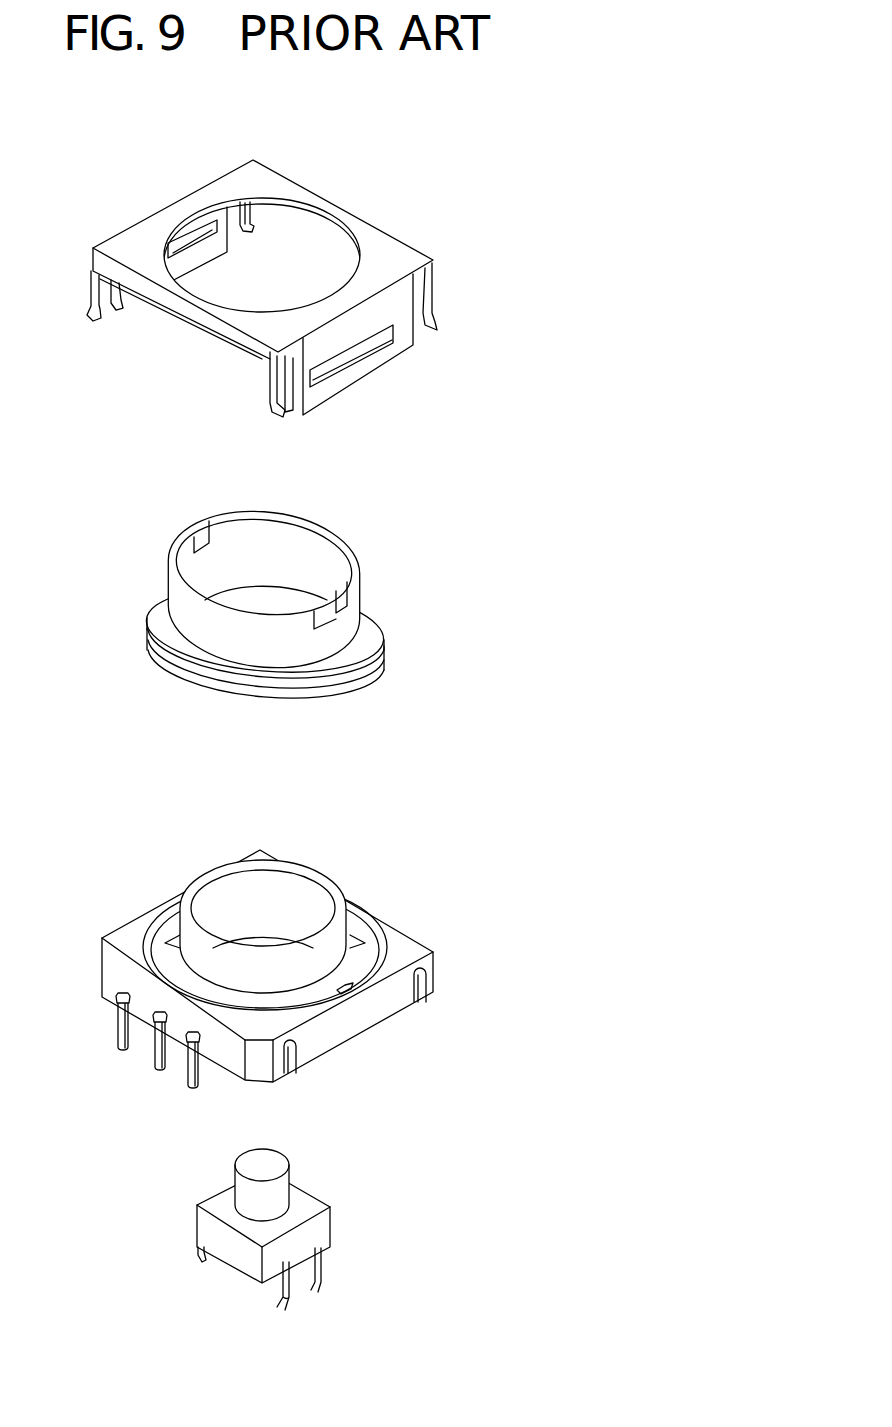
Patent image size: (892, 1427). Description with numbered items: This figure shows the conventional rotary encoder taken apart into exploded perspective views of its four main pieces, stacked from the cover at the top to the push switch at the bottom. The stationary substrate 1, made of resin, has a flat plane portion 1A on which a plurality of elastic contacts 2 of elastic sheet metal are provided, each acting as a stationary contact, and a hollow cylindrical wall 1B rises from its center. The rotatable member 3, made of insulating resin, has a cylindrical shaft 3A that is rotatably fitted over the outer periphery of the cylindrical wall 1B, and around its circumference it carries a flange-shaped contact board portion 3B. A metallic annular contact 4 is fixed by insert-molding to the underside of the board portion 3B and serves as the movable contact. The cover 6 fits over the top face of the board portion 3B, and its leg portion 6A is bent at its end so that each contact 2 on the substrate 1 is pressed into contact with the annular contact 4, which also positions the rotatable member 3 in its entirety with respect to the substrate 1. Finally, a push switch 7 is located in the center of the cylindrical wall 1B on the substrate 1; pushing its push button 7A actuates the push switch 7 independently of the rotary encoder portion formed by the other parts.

The stationary substrate 1 is at (336, 950).
The flat plane portion 1A is at (360, 950).
The hollow cylindrical wall 1B is at (303, 897).
The elastic contact 2 is at (420, 971).
The rotatable member 3 is at (363, 624).
The cylindrical shaft 3A is at (350, 589).
The contact board portion 3B is at (360, 647).
The annular contact 4 is at (343, 680).
The cover 6 is at (307, 288).
The leg portion 6A is at (400, 340).
The push switch 7 is at (369, 1202).
The push button 7A is at (275, 1165).